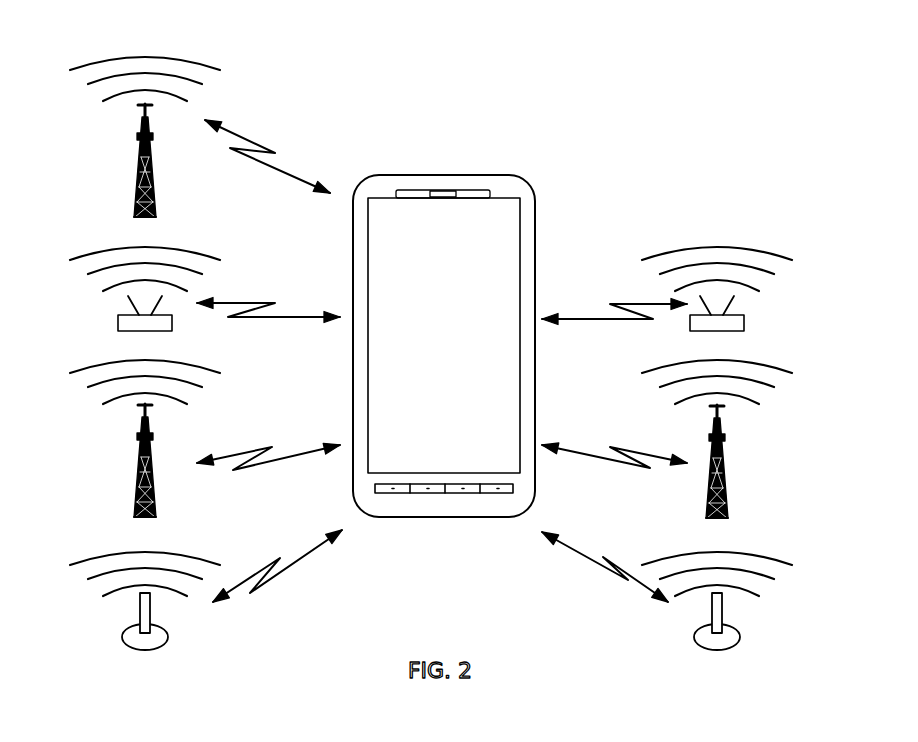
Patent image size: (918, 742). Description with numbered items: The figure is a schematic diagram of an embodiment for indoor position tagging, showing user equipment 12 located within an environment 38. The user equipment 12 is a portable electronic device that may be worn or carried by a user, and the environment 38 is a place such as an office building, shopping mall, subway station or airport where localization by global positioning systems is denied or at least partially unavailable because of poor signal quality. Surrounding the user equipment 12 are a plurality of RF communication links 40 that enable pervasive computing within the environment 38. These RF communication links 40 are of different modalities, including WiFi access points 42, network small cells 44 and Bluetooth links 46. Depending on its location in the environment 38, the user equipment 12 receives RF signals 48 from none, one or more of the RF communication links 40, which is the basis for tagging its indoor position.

The user equipment 12 is at (393, 176).
The environment 38 is at (648, 140).
The RF communication links 40 is at (139, 186).
The WiFi access points 42 is at (172, 322).
The network small cells 44 is at (150, 190).
The Bluetooth links 46 is at (167, 633).
The RF signals 48 is at (287, 177).